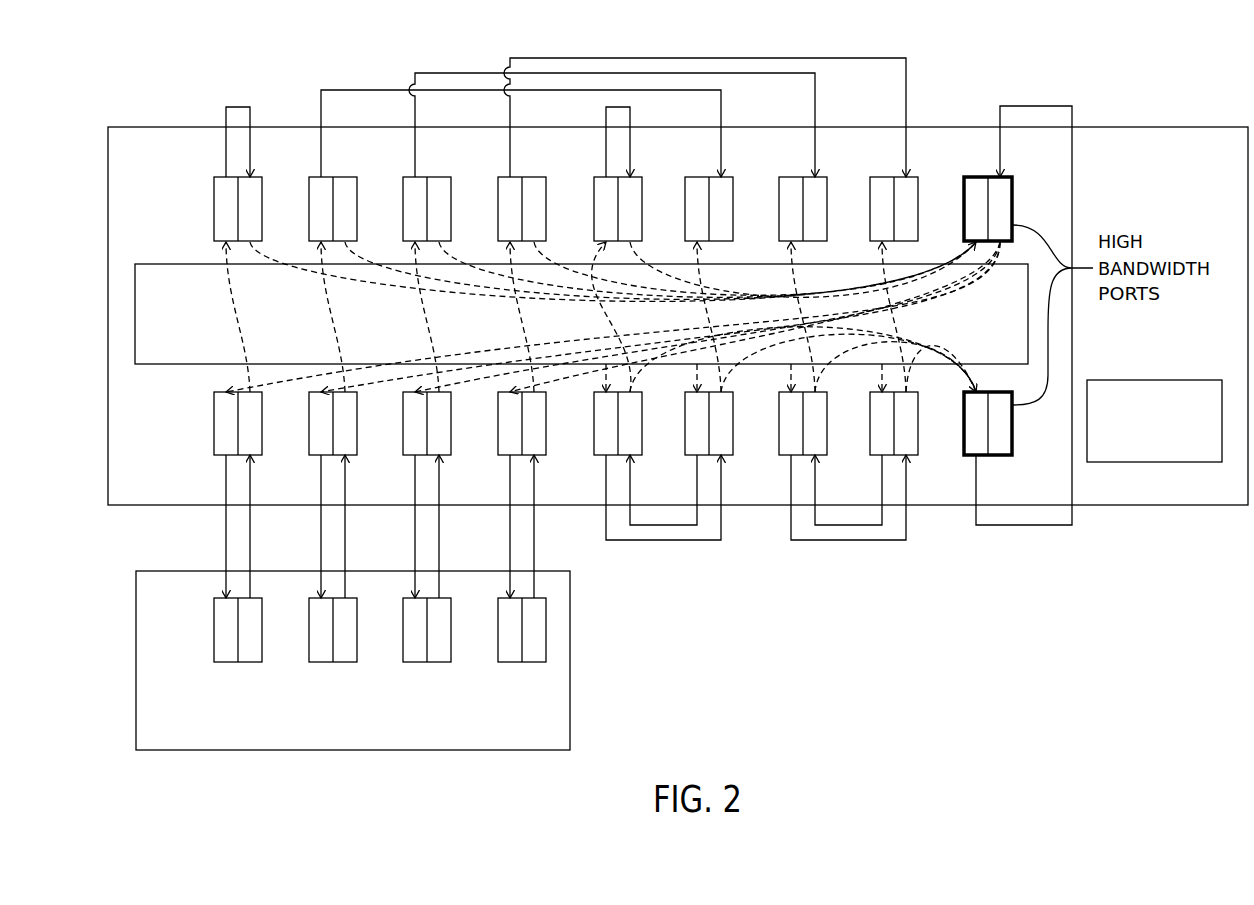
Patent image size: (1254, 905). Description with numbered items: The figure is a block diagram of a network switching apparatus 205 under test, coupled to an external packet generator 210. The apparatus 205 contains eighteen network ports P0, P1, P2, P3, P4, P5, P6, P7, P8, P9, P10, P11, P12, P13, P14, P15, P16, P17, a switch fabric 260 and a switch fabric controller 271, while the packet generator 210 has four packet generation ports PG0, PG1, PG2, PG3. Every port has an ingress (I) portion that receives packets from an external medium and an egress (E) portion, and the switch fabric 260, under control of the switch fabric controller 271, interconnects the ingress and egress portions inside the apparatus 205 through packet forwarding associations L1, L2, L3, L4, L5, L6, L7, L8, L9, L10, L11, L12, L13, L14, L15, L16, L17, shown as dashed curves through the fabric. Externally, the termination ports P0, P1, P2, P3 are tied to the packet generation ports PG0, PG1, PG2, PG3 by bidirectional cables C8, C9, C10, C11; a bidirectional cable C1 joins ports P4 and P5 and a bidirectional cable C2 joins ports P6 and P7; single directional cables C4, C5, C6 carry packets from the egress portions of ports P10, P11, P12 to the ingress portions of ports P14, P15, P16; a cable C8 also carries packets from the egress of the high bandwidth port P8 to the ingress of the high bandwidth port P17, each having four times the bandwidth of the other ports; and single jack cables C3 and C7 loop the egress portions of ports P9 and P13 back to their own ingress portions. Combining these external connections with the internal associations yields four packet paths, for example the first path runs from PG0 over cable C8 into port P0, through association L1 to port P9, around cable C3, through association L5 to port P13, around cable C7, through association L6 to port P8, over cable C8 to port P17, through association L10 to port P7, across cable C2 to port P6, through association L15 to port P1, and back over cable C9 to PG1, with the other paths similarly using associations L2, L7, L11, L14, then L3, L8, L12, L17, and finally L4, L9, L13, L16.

The network switching apparatus 205 is at (143, 127).
The switch fabric 260 is at (161, 264).
The packet generator 210 is at (153, 750).
The switch fabric controller 271 is at (1168, 380).
The network port P0 is at (217, 456).
The network port P1 is at (312, 456).
The network port P2 is at (406, 456).
The network port P3 is at (501, 456).
The network port P4 is at (597, 456).
The network port P5 is at (688, 456).
The network port P6 is at (782, 456).
The network port P7 is at (873, 456).
The network port P8 is at (967, 456).
The network port P9 is at (262, 177).
The network port P10 is at (357, 177).
The network port P11 is at (451, 177).
The network port P12 is at (546, 177).
The network port P13 is at (642, 177).
The network port P14 is at (733, 177).
The network port P15 is at (827, 177).
The network port P16 is at (918, 177).
The network port P17 is at (1013, 177).
The packet generation port PG0 is at (216, 662).
The packet generation port PG1 is at (311, 662).
The packet generation port PG2 is at (405, 662).
The packet generation port PG3 is at (500, 662).
The bidirectional cable C1 is at (653, 540).
The bidirectional cable C2 is at (838, 540).
The single jack cable C3 is at (236, 107).
The single directional cable C4 is at (341, 90).
The single directional cable C5 is at (446, 73).
The single directional cable C6 is at (573, 58).
The single jack cable C7 is at (606, 109).
The cable C8 is at (1013, 106).
The bidirectional cable C9 is at (345, 540).
The bidirectional cable C10 is at (439, 540).
The bidirectional cable C11 is at (534, 540).
The packet forwarding association L1 is at (231, 283).
The packet forwarding association L2 is at (321, 306).
The packet forwarding association L3 is at (415, 322).
The packet forwarding association L4 is at (510, 328).
The packet forwarding association L5 is at (575, 278).
The packet forwarding association L6 is at (636, 250).
The packet forwarding association L7 is at (723, 262).
The packet forwarding association L8 is at (816, 262).
The packet forwarding association L9 is at (907, 262).
The packet forwarding association L10 is at (968, 340).
The packet forwarding association L11 is at (983, 315).
The packet forwarding association L12 is at (965, 285).
The packet forwarding association L13 is at (870, 318).
The packet forwarding association L14 is at (908, 375).
The packet forwarding association L15 is at (818, 375).
The packet forwarding association L16 is at (723, 375).
The packet forwarding association L17 is at (633, 375).